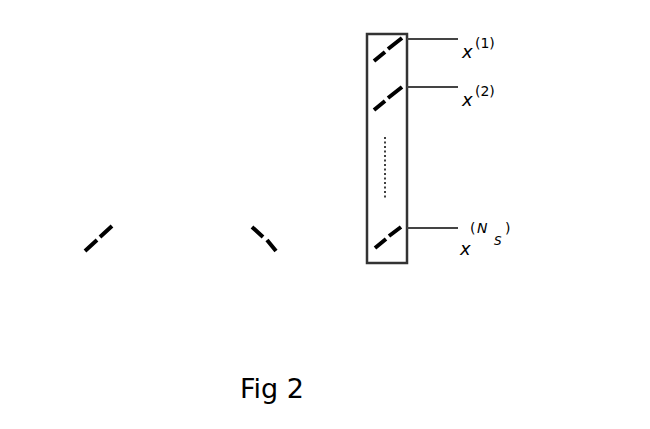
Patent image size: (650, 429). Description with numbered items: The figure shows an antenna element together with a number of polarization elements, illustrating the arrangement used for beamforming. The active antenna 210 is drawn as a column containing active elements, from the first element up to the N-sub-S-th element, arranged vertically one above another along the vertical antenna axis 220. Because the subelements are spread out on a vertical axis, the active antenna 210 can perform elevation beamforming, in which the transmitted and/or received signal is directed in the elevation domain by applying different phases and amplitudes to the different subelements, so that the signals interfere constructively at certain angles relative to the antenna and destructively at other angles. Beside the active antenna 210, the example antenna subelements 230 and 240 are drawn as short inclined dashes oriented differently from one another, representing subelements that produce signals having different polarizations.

The active antenna 210 is at (367, 113).
The vertical antenna axis 220 is at (385, 193).
The antenna subelement 230 is at (90, 245).
The antenna subelement 240 is at (293, 208).